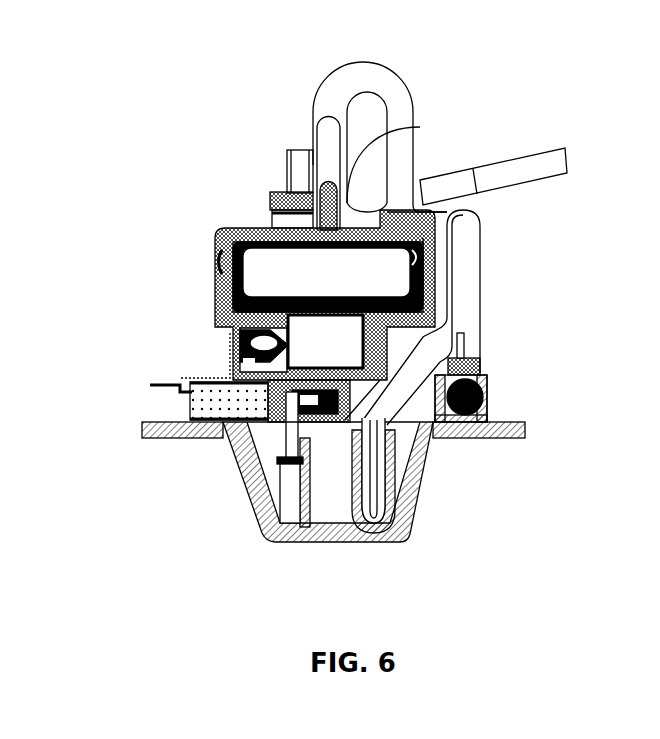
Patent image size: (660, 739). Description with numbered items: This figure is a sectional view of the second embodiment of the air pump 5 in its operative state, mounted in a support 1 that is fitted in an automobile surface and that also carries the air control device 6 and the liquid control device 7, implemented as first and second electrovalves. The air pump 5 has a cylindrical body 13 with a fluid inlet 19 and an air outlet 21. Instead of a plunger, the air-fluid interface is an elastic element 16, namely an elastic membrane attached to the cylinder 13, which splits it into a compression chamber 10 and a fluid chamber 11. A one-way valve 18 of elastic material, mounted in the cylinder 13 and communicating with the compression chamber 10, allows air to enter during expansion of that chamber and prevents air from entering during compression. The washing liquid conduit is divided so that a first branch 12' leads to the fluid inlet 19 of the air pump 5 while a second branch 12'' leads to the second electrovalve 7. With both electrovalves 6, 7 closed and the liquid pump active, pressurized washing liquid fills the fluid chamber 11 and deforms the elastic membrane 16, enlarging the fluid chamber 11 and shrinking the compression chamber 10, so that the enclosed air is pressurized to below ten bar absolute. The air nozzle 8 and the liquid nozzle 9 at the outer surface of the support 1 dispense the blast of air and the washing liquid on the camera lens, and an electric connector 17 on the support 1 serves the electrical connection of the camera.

The support 1 is at (427, 472).
The air pump 5 is at (225, 229).
The air control device 6 is at (203, 402).
The liquid control device 7 is at (487, 378).
The air nozzle 8 is at (283, 512).
The liquid nozzle 9 is at (403, 523).
The compression chamber 10 is at (347, 357).
The fluid chamber 11 is at (346, 287).
The first branch of the washing liquid conduit 12' is at (476, 120).
The second branch of the washing liquid conduit 12'' is at (496, 317).
The body 13 is at (215, 268).
The elastic element 16 is at (430, 272).
The electric connector 17 is at (287, 198).
The one-way valve 18 is at (240, 350).
The fluid inlet 19 is at (410, 128).
The air outlet 21 is at (283, 449).